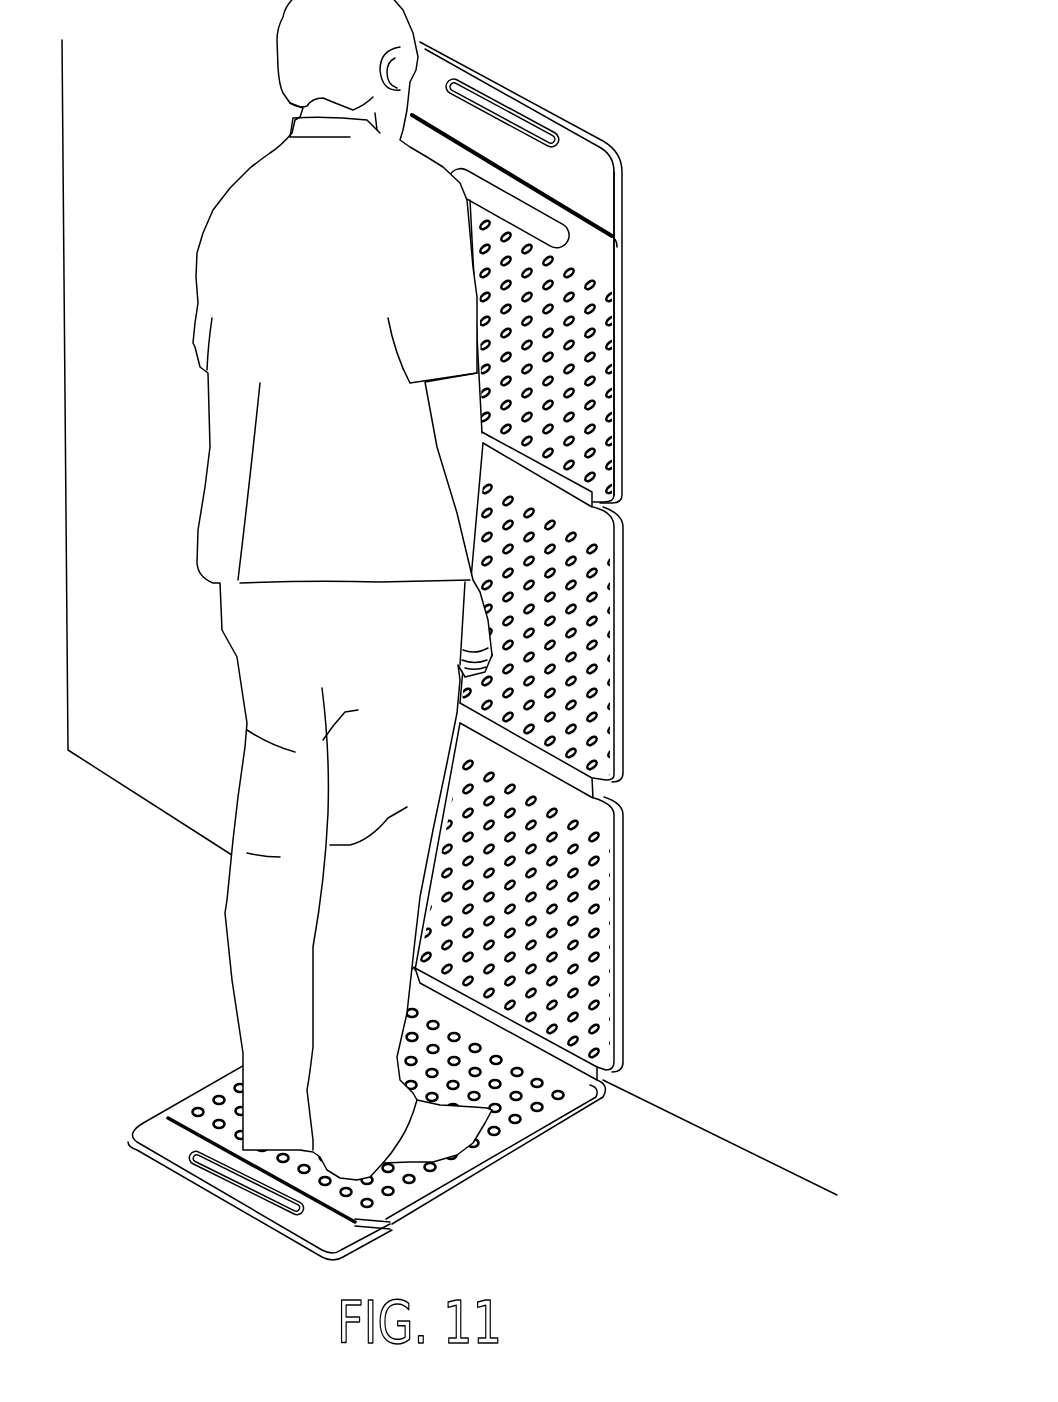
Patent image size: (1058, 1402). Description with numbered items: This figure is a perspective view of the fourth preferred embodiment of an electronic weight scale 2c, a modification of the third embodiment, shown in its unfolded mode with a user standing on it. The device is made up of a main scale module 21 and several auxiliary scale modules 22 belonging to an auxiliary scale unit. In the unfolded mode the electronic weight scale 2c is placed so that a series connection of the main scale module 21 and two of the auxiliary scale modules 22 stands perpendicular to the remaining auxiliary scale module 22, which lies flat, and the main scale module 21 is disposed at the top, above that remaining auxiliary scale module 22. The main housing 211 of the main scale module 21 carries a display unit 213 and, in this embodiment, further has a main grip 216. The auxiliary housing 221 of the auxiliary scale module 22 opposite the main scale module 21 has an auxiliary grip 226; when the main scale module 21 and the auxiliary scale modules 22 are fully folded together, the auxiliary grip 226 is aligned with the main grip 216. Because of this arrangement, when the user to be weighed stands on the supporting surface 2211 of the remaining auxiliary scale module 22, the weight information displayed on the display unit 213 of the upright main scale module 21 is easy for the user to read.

The electronic weight scale 2c is at (738, 30).
The main scale module 21 is at (601, 274).
The main housing 211 is at (615, 272).
The display unit 213 is at (555, 220).
The main grip 216 is at (580, 138).
The auxiliary scale modules 22 is at (419, 863).
The auxiliary housing 221 is at (512, 1157).
The supporting surface 2211 is at (550, 1110).
The auxiliary grip 226 is at (163, 1172).